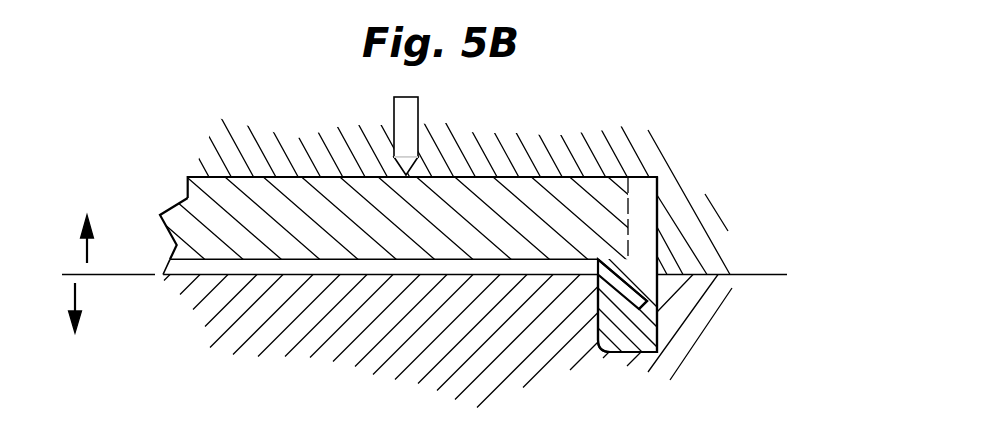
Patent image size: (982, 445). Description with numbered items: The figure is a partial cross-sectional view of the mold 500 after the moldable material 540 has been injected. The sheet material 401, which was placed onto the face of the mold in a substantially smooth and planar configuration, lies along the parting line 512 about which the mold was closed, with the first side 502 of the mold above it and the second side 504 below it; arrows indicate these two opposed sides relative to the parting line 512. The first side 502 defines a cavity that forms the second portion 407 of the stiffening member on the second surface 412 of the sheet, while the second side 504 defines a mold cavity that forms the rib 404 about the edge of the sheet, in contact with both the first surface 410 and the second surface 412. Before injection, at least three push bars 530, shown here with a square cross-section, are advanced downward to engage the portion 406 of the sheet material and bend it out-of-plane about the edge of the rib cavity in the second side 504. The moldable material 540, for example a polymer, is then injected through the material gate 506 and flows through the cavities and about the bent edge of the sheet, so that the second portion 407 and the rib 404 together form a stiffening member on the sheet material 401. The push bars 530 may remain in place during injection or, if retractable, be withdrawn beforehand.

The mold 500 is at (173, 112).
The first side 502 is at (111, 236).
The second side 504 is at (100, 308).
The material gate 506 is at (422, 110).
The parting line 512 is at (45, 243).
The moldable material 540 is at (220, 189).
The sheet material 401 is at (277, 275).
The rib 404 is at (633, 333).
The out-of-plane portion 406 is at (617, 281).
The second portion 407 is at (562, 217).
The first surface 410 is at (433, 275).
The second surface 412 is at (639, 281).
The push bars 530 is at (647, 200).